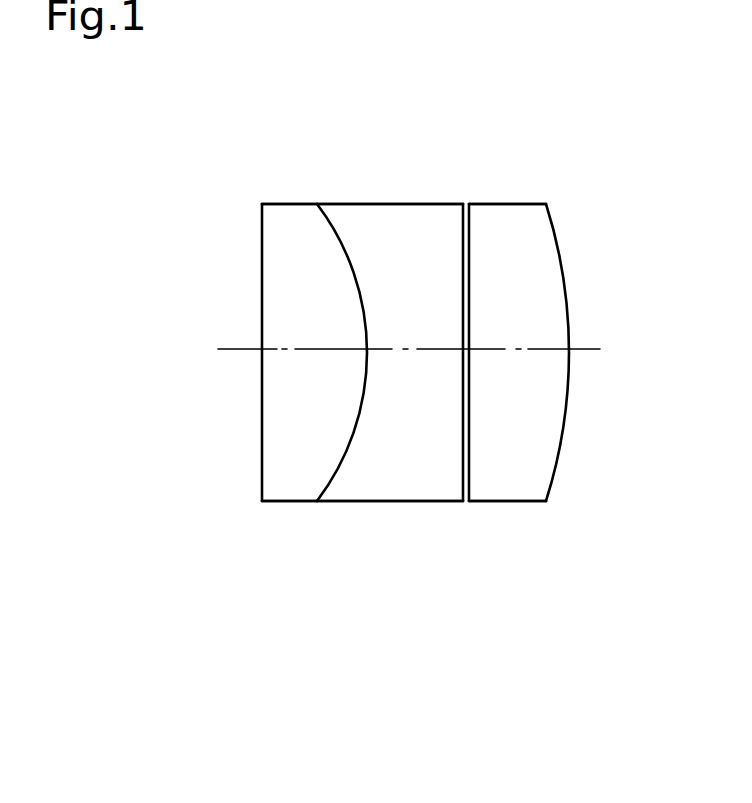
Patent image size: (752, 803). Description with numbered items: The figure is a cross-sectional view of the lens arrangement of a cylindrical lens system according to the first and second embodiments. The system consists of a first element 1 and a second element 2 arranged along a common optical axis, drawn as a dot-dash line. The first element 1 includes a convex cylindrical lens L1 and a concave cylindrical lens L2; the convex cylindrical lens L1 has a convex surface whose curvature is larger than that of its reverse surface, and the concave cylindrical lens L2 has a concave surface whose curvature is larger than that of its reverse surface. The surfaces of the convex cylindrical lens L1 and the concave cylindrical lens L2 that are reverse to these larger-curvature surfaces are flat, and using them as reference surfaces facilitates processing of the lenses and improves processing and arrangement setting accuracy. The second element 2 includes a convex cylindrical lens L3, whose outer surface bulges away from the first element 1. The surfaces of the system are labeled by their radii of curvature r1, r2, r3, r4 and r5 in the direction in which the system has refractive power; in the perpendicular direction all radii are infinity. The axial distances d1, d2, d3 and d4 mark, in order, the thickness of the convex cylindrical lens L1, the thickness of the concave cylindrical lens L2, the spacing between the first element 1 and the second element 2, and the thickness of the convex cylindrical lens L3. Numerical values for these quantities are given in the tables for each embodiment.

The first element 1 is at (460, 197).
The second element 2 is at (547, 196).
The convex cylindrical lens L1 is at (280, 410).
The concave cylindrical lens L2 is at (390, 485).
The convex cylindrical lens L3 is at (555, 401).
The radius of curvature r1 is at (263, 477).
The radius of curvature r2 is at (338, 468).
The radius of curvature r3 is at (467, 478).
The radius of curvature r4 is at (471, 492).
The radius of curvature r5 is at (551, 478).
The axial distance d1 is at (313, 347).
The axial distance d2 is at (387, 347).
The axial distance d3 is at (460, 347).
The axial distance d4 is at (533, 347).